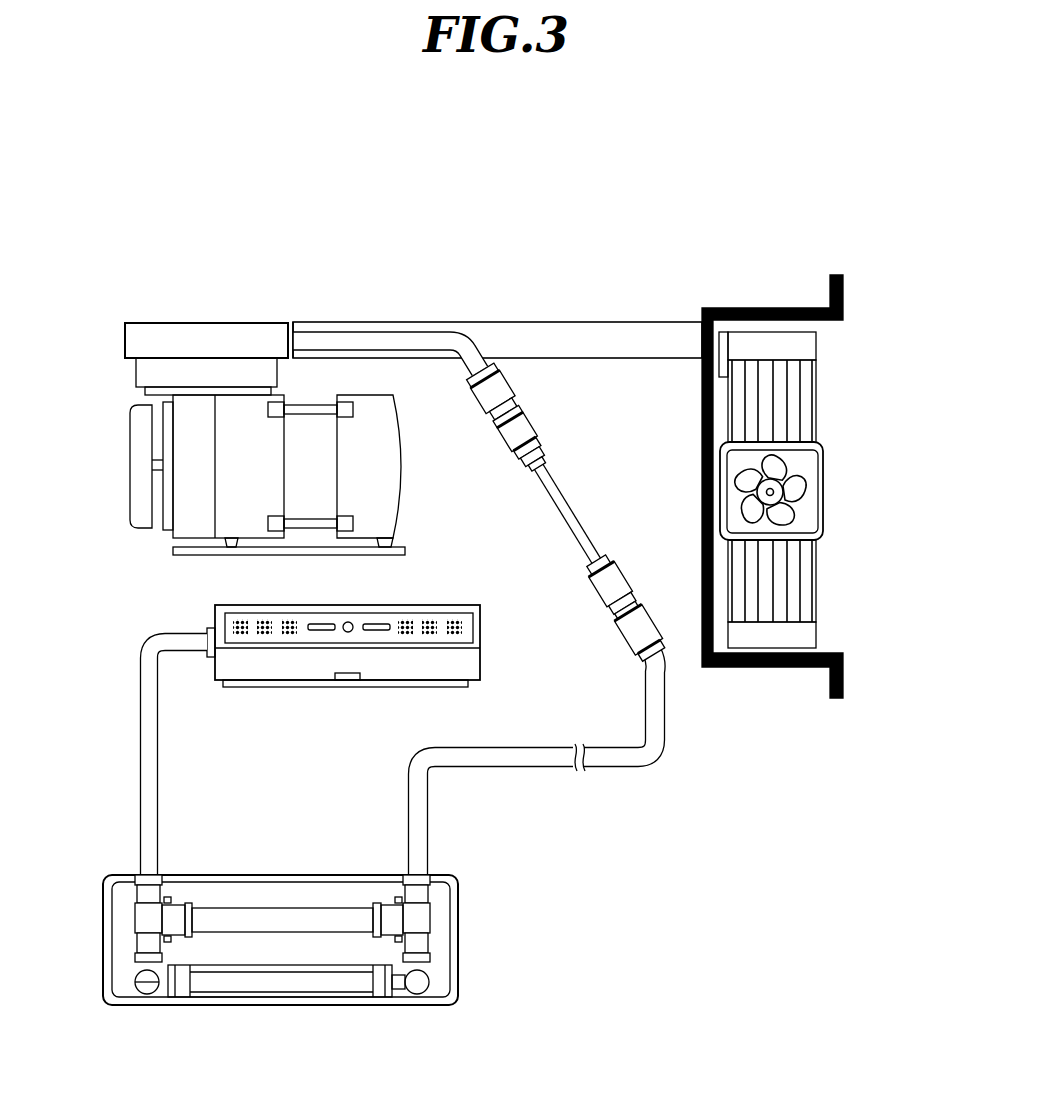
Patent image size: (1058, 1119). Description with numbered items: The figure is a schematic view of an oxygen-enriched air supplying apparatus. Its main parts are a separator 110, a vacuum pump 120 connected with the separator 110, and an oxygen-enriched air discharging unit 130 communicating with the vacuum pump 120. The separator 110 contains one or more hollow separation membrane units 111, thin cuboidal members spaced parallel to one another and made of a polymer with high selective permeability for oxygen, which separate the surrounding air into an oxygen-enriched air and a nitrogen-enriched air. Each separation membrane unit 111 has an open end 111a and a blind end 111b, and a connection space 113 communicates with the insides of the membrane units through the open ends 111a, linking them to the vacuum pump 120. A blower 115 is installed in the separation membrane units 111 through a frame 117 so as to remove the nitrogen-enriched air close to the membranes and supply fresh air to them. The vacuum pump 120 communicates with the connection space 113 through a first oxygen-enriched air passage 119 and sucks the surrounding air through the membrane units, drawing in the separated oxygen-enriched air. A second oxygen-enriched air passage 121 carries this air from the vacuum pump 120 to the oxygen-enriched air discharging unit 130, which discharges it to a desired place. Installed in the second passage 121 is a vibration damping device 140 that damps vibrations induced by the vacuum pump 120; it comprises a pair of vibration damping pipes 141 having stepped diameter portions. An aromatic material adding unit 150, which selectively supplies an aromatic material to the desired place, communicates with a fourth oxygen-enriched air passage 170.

The separator 110 is at (815, 471).
The hollow separation membrane units 111 is at (790, 587).
The open end 111a is at (812, 362).
The blind end 111b is at (810, 622).
The connection space 113 is at (785, 342).
The blower 115 is at (798, 495).
The frame 117 is at (825, 468).
The first oxygen-enriched air passage 119 is at (478, 326).
The vacuum pump 120 is at (168, 333).
The second oxygen-enriched air passage 121 is at (621, 768).
The oxygen-enriched air discharging unit 130 is at (320, 688).
The vibration damping device 140 is at (580, 503).
The vibration damping pipes 141 is at (500, 418).
The aromatic material adding unit 150 is at (460, 944).
The fourth oxygen-enriched air passage 170 is at (146, 776).